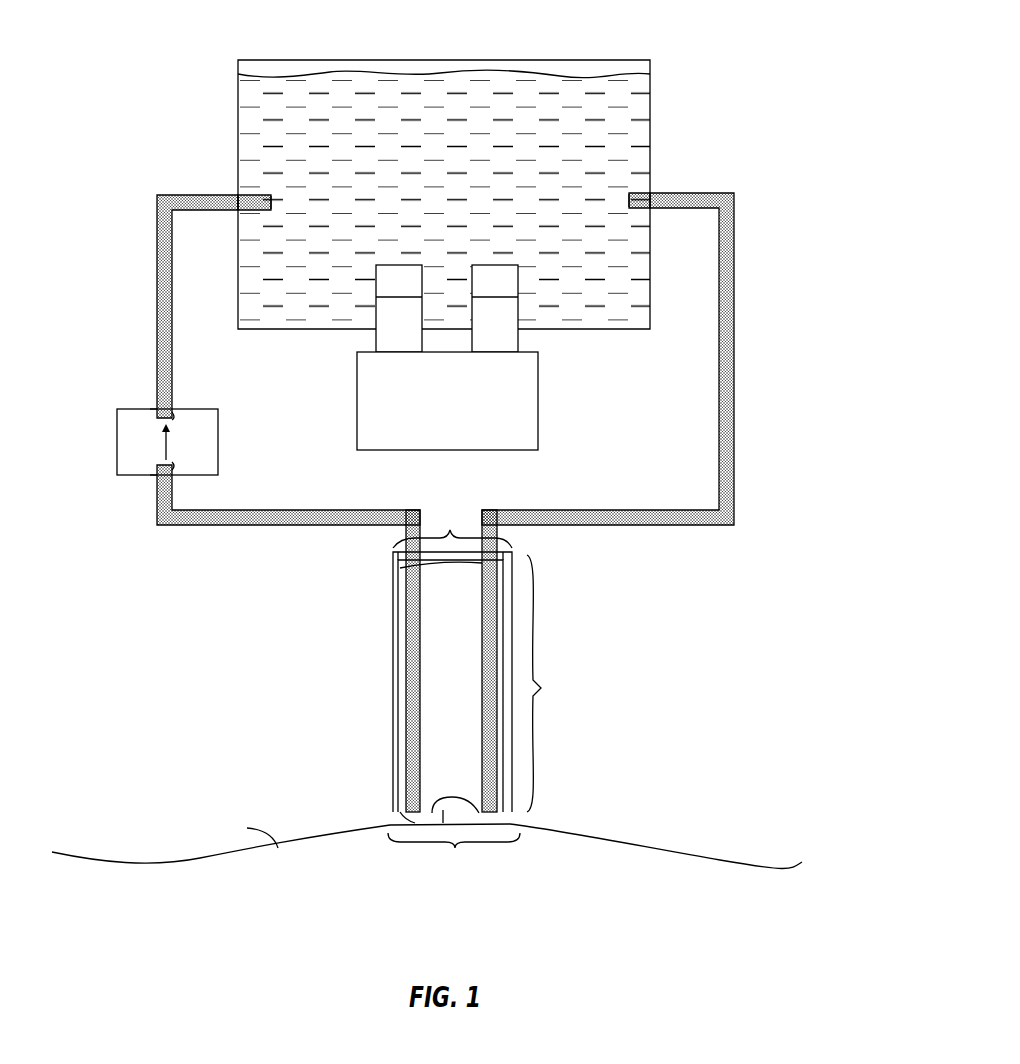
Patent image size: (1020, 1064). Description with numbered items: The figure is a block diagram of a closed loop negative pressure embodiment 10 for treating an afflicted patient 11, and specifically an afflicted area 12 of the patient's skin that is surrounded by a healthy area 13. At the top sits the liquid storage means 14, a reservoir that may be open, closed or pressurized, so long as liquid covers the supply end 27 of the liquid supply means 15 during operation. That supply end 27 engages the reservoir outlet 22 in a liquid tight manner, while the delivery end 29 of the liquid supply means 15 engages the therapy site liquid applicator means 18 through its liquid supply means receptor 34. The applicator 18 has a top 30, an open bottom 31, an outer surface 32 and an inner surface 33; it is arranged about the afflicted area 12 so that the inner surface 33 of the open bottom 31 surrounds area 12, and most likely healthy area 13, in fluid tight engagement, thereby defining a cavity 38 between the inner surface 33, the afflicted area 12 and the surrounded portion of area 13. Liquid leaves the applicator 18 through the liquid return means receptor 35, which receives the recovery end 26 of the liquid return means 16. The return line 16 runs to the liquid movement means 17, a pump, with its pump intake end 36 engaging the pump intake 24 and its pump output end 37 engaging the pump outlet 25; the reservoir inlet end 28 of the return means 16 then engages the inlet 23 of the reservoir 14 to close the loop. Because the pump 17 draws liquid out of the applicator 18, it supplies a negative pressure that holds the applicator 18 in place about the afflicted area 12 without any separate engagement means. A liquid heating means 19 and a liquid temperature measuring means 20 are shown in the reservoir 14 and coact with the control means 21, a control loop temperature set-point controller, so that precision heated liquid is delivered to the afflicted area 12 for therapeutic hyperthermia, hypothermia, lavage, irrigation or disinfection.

The closed loop negative pressure embodiment 10 is at (197, 42).
The afflicted patient 11 is at (605, 855).
The afflicted area of the patient's skin 12 is at (443, 823).
The healthy area 13 is at (412, 815).
The liquid storage means 14 is at (610, 130).
The liquid supply means 15 is at (734, 425).
The liquid return means 16 is at (157, 290).
The liquid movement means 17 is at (205, 440).
The therapy site liquid applicator means 18 is at (552, 683).
The liquid heating means 19 is at (400, 265).
The liquid temperature measuring means 20 is at (495, 265).
The control means 21 is at (525, 412).
The outlet 22 is at (650, 192).
The inlet 23 is at (237, 193).
The pump intake 24 is at (175, 468).
The pump outlet 25 is at (175, 418).
The recovery end 26 is at (432, 800).
The supply end 27 is at (630, 196).
The reservoir inlet end 28 is at (272, 197).
The delivery end 29 is at (493, 815).
The top 30 is at (450, 530).
The open bottom 31 is at (455, 848).
The outer surface 32 is at (393, 600).
The inner surface 33 is at (472, 565).
The liquid supply means receptor 34 is at (508, 556).
The liquid return means receptor 35 is at (400, 552).
The pump intake end 36 is at (153, 477).
The pump output end 37 is at (150, 408).
The cavity 38 is at (450, 645).